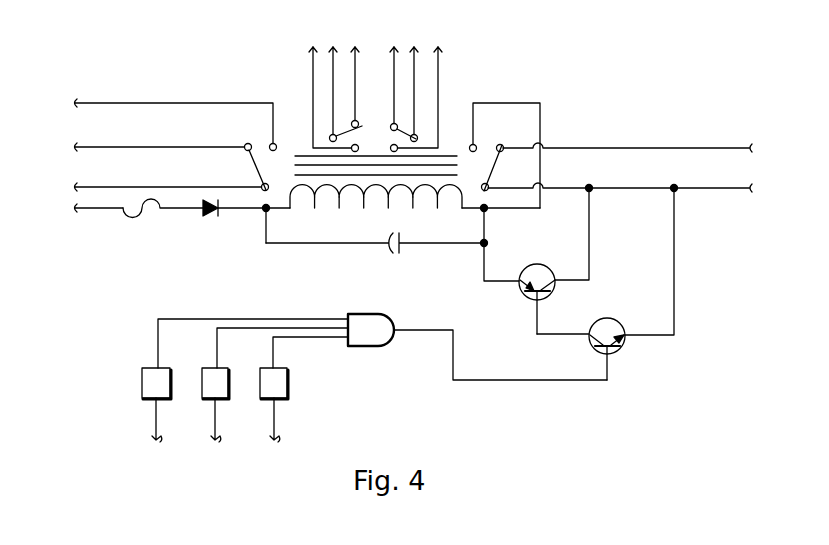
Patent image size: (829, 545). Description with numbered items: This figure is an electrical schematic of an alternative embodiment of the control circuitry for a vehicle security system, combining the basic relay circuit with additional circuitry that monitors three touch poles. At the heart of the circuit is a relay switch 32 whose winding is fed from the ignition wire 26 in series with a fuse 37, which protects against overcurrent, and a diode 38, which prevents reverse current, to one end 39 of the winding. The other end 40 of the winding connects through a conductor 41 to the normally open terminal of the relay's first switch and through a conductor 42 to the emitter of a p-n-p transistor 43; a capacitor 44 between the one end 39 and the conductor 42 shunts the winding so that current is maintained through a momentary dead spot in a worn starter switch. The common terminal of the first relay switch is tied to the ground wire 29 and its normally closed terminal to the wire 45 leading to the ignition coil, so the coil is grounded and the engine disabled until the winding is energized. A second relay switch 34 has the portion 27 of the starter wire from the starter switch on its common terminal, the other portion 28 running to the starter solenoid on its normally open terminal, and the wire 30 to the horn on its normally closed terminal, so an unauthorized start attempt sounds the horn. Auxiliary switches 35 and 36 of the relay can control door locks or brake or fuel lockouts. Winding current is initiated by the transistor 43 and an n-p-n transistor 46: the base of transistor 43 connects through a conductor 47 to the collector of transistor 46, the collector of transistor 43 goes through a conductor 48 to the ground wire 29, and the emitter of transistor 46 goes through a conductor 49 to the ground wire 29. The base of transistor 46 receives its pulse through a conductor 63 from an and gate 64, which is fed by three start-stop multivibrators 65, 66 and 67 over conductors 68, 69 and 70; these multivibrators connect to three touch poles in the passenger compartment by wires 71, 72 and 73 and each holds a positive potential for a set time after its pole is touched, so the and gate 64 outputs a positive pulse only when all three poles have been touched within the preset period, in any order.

The ignition wire 26 is at (110, 210).
The portion of starter wire 27 is at (179, 187).
The other portion of starter wire 28 is at (166, 103).
The ground wire 29 is at (628, 187).
The wire to horn 30 is at (152, 147).
The relay switch 32 is at (356, 217).
The single pole, double throw switch 34 is at (487, 152).
The auxiliary single pole, double throw switch 35 is at (260, 144).
The auxiliary single pole, double throw switch 36 is at (358, 131).
The fuse 37 is at (135, 212).
The diode 38 is at (199, 213).
The one end of relay winding 39 is at (266, 213).
The other end of relay winding 40 is at (486, 211).
The conductor 41 is at (542, 110).
The conductor 42 is at (484, 264).
The p-n-p transistor 43 is at (540, 256).
The capacitor 44 is at (392, 248).
The wire to ignition coil 45 is at (645, 148).
The n-p-n transistor 46 is at (603, 318).
The conductor 47 is at (538, 321).
The conductor 48 is at (590, 263).
The conductor 49 is at (675, 297).
The conductor 63 is at (503, 382).
The and gate 64 is at (360, 348).
The start-stop multivibrator 65 is at (265, 398).
The start-stop multivibrator 66 is at (204, 398).
The start-stop multivibrator 67 is at (142, 396).
The conductor 68 is at (273, 359).
The conductor 69 is at (217, 356).
The conductor 70 is at (158, 350).
The wire to touch pole 71 is at (274, 428).
The wire to touch pole 72 is at (216, 428).
The wire to touch pole 73 is at (156, 428).